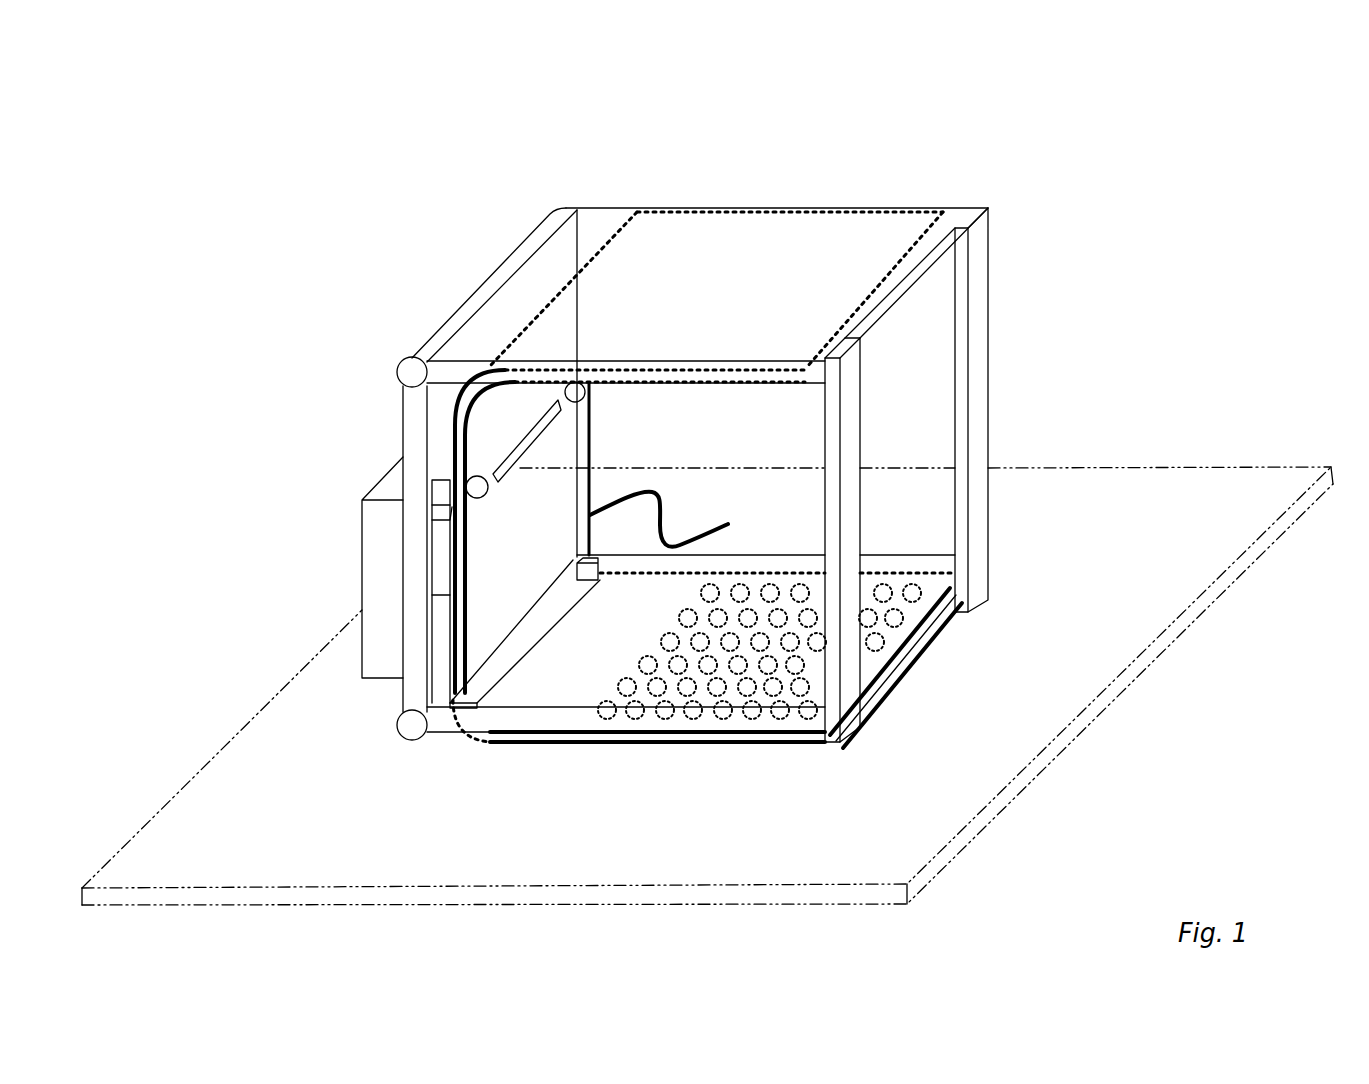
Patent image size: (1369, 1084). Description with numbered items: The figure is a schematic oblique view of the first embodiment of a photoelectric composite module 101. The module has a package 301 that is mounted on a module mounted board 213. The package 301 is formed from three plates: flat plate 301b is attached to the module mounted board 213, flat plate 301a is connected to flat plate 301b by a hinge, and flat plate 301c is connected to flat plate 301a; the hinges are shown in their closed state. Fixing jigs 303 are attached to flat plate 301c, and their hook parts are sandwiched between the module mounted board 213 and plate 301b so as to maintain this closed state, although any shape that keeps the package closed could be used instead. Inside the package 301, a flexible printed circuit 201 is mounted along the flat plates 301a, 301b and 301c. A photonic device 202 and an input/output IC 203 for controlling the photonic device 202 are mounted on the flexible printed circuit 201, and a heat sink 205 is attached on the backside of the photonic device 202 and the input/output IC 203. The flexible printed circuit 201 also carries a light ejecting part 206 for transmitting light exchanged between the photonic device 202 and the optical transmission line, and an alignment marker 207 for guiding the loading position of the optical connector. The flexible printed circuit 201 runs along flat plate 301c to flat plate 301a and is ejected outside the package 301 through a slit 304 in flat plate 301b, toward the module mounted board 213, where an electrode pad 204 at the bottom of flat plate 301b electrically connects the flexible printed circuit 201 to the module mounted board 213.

The photoelectric composite module 101 is at (884, 150).
The flexible printed circuit 201 is at (692, 519).
The photonic device 202 is at (443, 490).
The input/output IC 203 is at (440, 588).
The electrode pad 204 is at (747, 713).
The heat sink 205 is at (360, 548).
The light ejecting part 206 is at (540, 425).
The alignment marker 207 is at (488, 488).
The module mounted board 213 is at (1074, 721).
The package 301 is at (495, 320).
The flat plate 301a is at (428, 340).
The flat plate 301b is at (427, 738).
The flat plate 301c is at (618, 213).
The fixing jigs 303 is at (860, 412).
The slit 304 is at (513, 652).